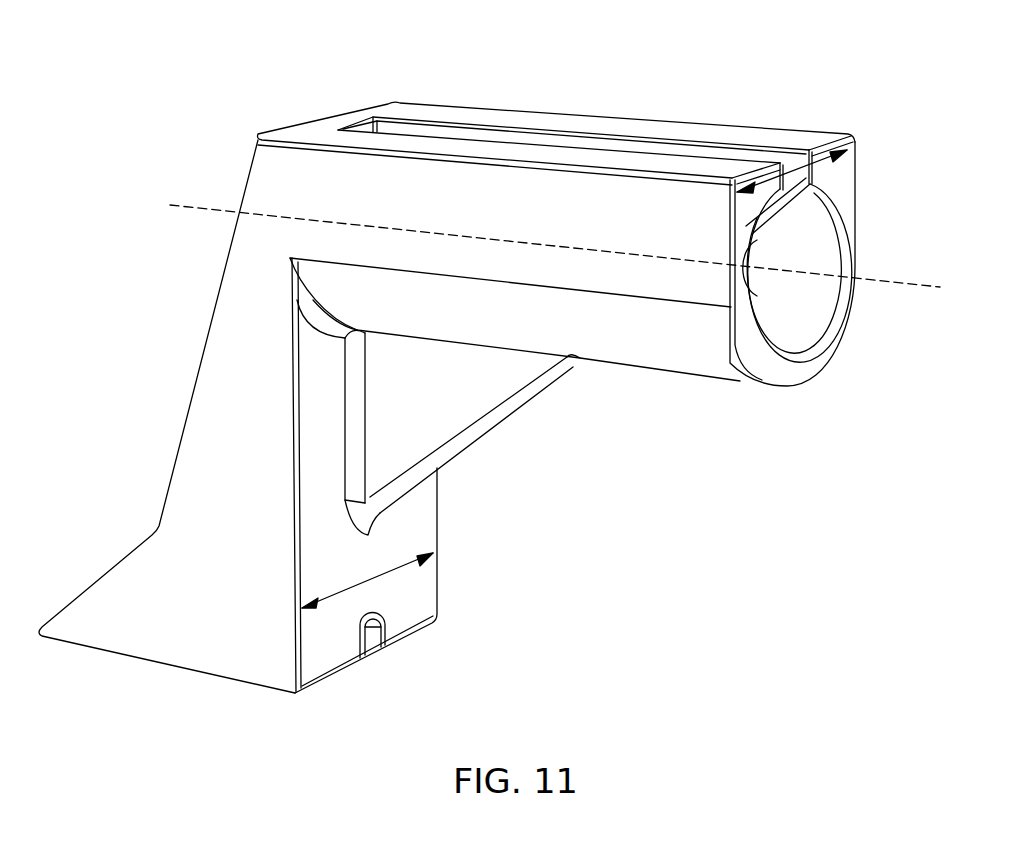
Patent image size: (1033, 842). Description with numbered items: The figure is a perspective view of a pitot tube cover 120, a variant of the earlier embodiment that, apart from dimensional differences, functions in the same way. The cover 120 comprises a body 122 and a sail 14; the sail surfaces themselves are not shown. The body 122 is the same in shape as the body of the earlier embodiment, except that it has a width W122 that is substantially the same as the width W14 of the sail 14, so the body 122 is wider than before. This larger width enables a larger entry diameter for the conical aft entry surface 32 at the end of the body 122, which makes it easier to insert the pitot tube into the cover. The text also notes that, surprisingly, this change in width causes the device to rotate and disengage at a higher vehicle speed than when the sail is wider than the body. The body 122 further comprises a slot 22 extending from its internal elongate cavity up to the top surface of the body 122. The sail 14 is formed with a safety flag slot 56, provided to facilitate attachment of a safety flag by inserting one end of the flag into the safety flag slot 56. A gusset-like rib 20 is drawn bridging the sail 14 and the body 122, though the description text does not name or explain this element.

The pitot tube cover 120 is at (170, 120).
The sail 14 is at (197, 450).
The width of sail W14 is at (406, 556).
The safety flag slot 56 is at (373, 643).
The gusset rib 20 is at (483, 397).
The body 122 is at (665, 120).
The width of body W122 is at (826, 168).
The slot 22 is at (790, 164).
The conical aft entry surface 32 is at (833, 241).